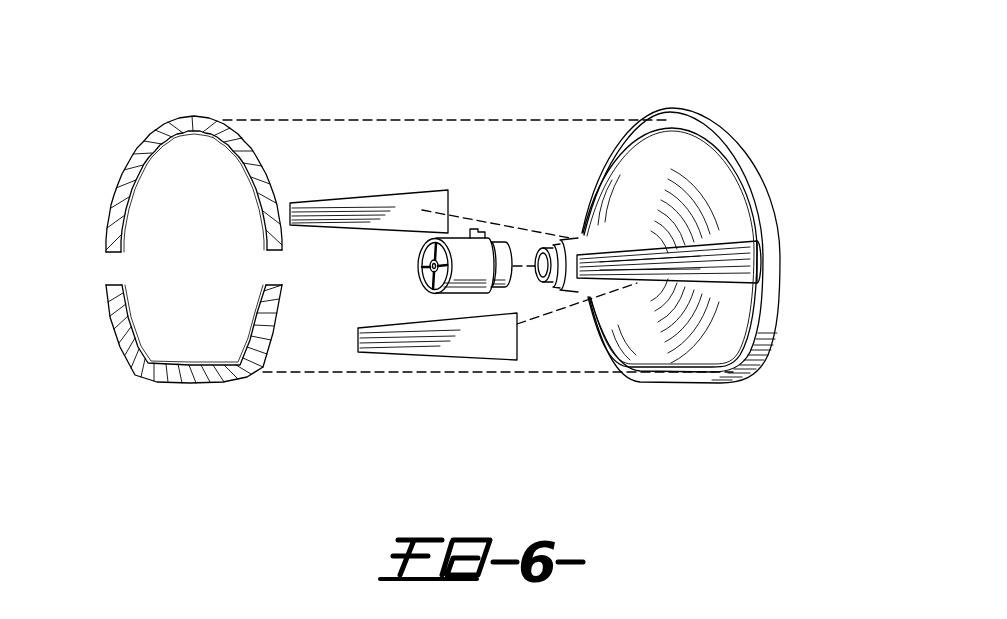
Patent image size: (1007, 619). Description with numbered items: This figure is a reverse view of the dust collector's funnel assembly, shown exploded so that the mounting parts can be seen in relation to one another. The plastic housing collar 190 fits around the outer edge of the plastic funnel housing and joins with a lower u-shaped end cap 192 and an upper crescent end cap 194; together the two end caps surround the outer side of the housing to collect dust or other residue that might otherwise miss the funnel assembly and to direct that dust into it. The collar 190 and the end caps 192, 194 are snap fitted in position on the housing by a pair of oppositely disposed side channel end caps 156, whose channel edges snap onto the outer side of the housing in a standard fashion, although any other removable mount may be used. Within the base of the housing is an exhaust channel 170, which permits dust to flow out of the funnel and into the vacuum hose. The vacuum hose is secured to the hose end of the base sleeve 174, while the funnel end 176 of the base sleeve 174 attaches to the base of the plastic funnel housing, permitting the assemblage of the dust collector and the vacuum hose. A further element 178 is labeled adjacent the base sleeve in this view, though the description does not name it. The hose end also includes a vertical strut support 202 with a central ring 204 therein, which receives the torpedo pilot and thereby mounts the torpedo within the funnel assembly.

The side channel end cap 156 is at (372, 205).
The exhaust channel 170 is at (735, 280).
The base sleeve 174 is at (467, 287).
The funnel end 176 is at (509, 278).
The terminal 178 is at (480, 228).
The plastic housing collar 190 is at (753, 157).
The lower u-shaped end cap 192 is at (183, 381).
The upper crescent end cap 194 is at (193, 118).
The vertical strut support 202 is at (428, 250).
The central ring 204 is at (432, 270).